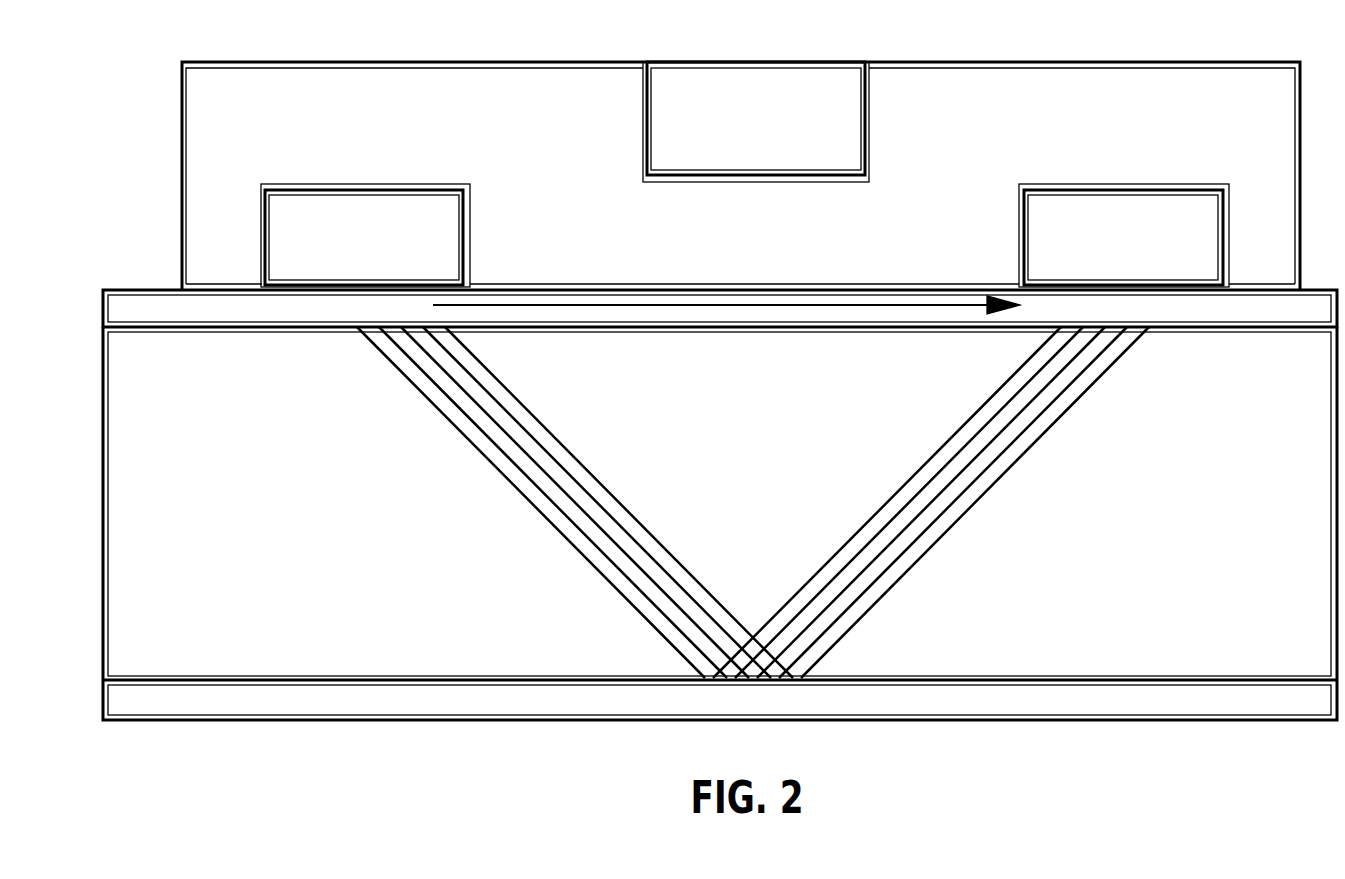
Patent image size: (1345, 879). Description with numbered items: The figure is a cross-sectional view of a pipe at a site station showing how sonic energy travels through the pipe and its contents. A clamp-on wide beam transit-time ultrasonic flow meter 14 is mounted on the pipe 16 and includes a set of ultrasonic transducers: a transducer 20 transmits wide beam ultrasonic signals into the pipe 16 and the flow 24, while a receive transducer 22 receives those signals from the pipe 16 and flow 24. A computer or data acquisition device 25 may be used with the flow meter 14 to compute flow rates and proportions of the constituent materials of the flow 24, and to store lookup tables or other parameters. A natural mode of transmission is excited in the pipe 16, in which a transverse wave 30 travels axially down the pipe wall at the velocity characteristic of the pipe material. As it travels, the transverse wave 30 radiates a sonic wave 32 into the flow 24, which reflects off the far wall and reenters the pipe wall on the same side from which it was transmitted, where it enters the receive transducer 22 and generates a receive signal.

The clamp-on wide beam transit-time ultrasonic flow meter 14 is at (541, 77).
The pipe 16 is at (132, 303).
The transducer 20 is at (387, 187).
The transducer 22 is at (1117, 187).
The flow 24 is at (253, 517).
The computer or data acquisition device 25 is at (738, 157).
The transverse wave 30 is at (802, 305).
The sonic wave 32 is at (522, 507).